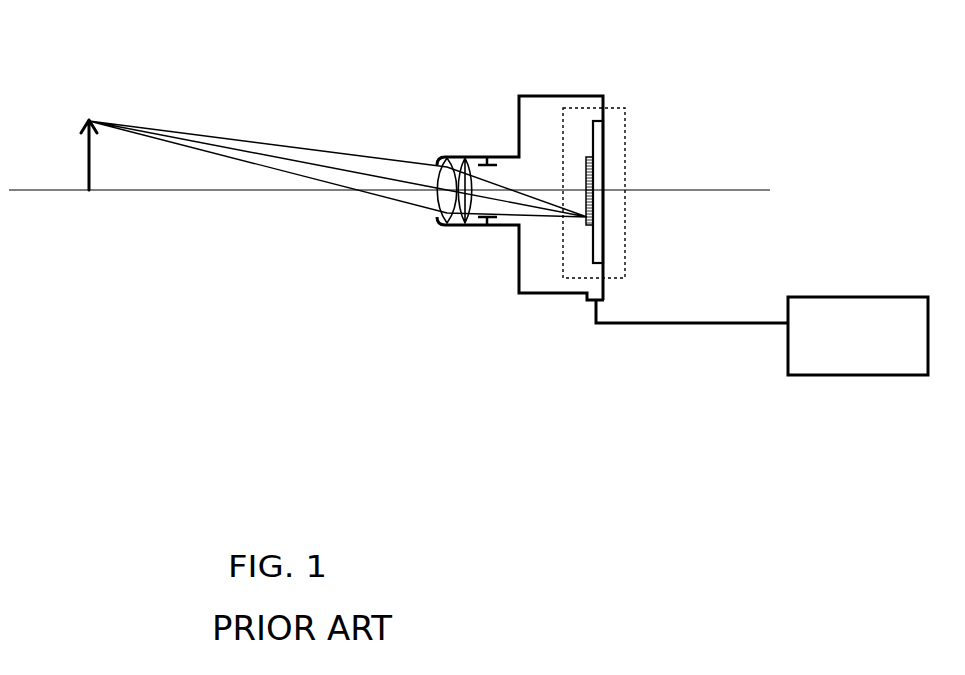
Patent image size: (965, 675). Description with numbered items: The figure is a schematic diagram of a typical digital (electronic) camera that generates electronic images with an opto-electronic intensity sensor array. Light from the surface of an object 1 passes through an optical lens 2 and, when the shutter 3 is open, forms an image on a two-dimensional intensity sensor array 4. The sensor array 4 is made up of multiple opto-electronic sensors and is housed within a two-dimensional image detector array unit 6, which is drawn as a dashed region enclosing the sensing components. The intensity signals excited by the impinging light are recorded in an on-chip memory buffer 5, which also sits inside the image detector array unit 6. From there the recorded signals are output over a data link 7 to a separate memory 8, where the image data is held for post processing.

The object 1 is at (88, 165).
The optical lens 2 is at (445, 158).
The shutter 3 is at (487, 160).
The two-dimensional intensity sensor array 4 is at (590, 157).
The on-chip memory buffer 5 is at (601, 125).
The two-dimensional image detector array unit 6 is at (634, 172).
The data link 7 is at (651, 323).
The memory 8 is at (843, 297).